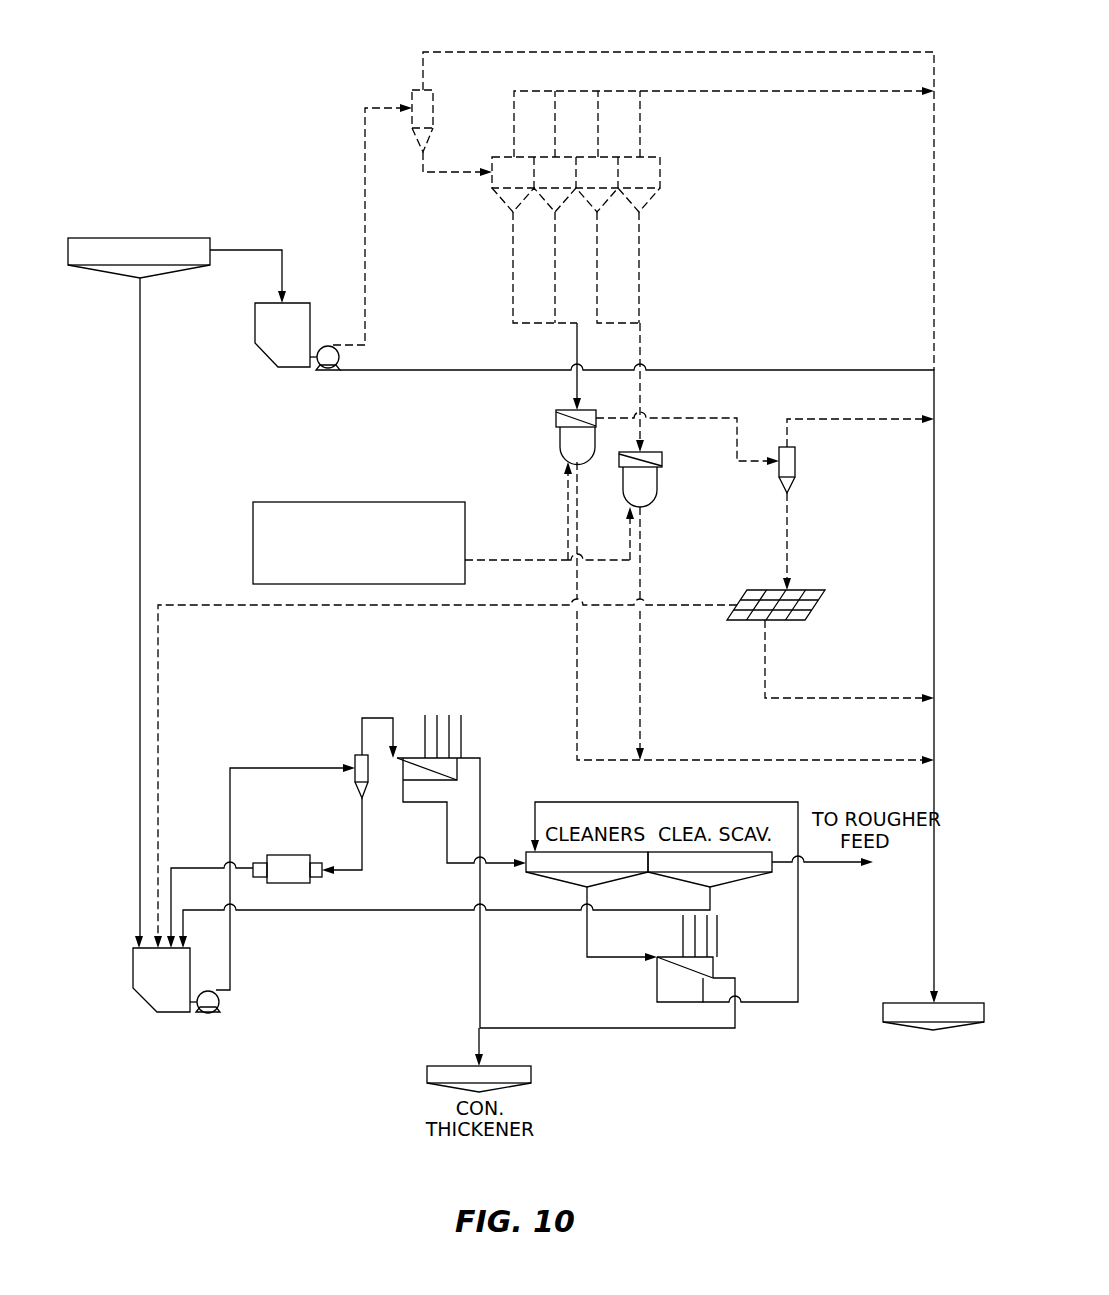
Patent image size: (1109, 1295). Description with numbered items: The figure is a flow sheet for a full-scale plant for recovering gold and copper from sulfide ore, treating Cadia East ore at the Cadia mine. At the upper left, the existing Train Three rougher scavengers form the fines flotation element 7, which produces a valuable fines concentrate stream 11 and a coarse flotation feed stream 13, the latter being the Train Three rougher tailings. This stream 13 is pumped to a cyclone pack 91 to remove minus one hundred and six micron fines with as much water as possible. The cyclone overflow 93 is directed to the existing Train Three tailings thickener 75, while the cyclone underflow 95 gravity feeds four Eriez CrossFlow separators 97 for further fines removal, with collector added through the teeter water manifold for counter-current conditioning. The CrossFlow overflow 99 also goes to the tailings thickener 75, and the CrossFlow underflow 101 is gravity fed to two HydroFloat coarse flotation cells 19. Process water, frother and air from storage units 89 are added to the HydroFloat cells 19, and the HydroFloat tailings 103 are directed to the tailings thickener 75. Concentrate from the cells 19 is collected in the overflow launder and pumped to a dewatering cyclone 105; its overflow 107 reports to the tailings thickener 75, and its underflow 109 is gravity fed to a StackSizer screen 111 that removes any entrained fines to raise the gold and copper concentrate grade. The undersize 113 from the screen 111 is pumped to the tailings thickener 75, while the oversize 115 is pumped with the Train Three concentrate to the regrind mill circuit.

The fines flotation element 7 is at (175, 272).
The valuable fines concentrate stream 11 is at (140, 447).
The coarse flotation feed stream 13 is at (243, 250).
The coarse flotation cell 19 is at (556, 432).
The tailings thickener 75 is at (893, 1003).
The storage units 89 is at (357, 502).
The cyclone pack 91 is at (412, 103).
The cyclone overflow 93 is at (678, 52).
The cyclone underflow 95 is at (455, 172).
The CrossFlow separators 97 is at (650, 157).
The CrossFlow overflow 99 is at (738, 91).
The CrossFlow underflow 101 is at (641, 258).
The HydroFloat tailings 103 is at (577, 678).
The dewatering cyclone 105 is at (796, 455).
The dewatering cyclone overflow 107 is at (840, 419).
The HF concentrate cyclone underflow line 109 is at (787, 548).
The StackSizer screen 111 is at (818, 606).
The undersize 113 is at (840, 698).
The oversize 115 is at (683, 606).